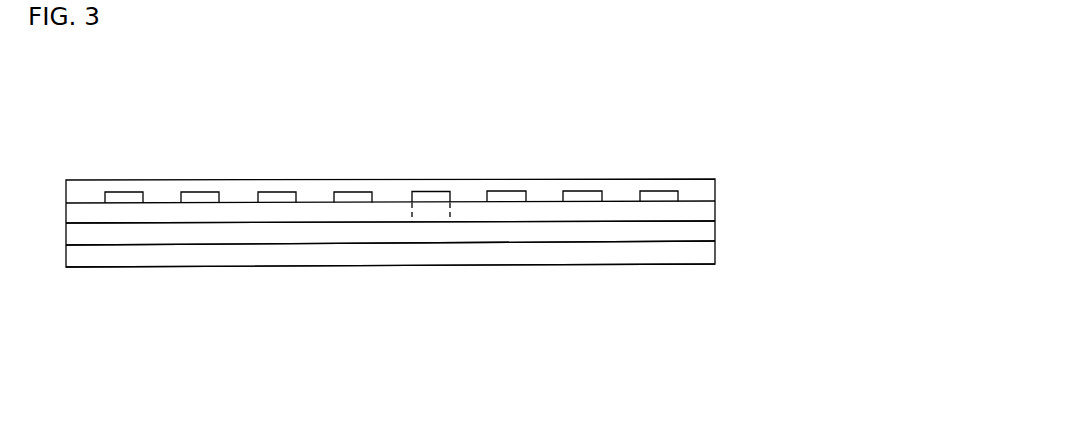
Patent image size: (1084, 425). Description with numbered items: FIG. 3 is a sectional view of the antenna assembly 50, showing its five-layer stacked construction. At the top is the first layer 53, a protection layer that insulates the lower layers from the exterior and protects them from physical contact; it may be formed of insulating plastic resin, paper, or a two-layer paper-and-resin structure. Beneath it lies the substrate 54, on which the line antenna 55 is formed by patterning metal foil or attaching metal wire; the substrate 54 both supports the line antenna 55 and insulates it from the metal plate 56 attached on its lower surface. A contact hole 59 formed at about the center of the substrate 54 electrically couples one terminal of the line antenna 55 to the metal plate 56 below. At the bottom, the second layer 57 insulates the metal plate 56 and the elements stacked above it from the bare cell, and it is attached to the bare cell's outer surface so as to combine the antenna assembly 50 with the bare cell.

The antenna assembly 50 is at (731, 84).
The first layer 53 is at (322, 187).
The substrate 54 is at (705, 213).
The line antenna 55 is at (428, 192).
The metal plate 56 is at (707, 235).
The second layer 57 is at (713, 255).
The contact hole 59 is at (432, 213).